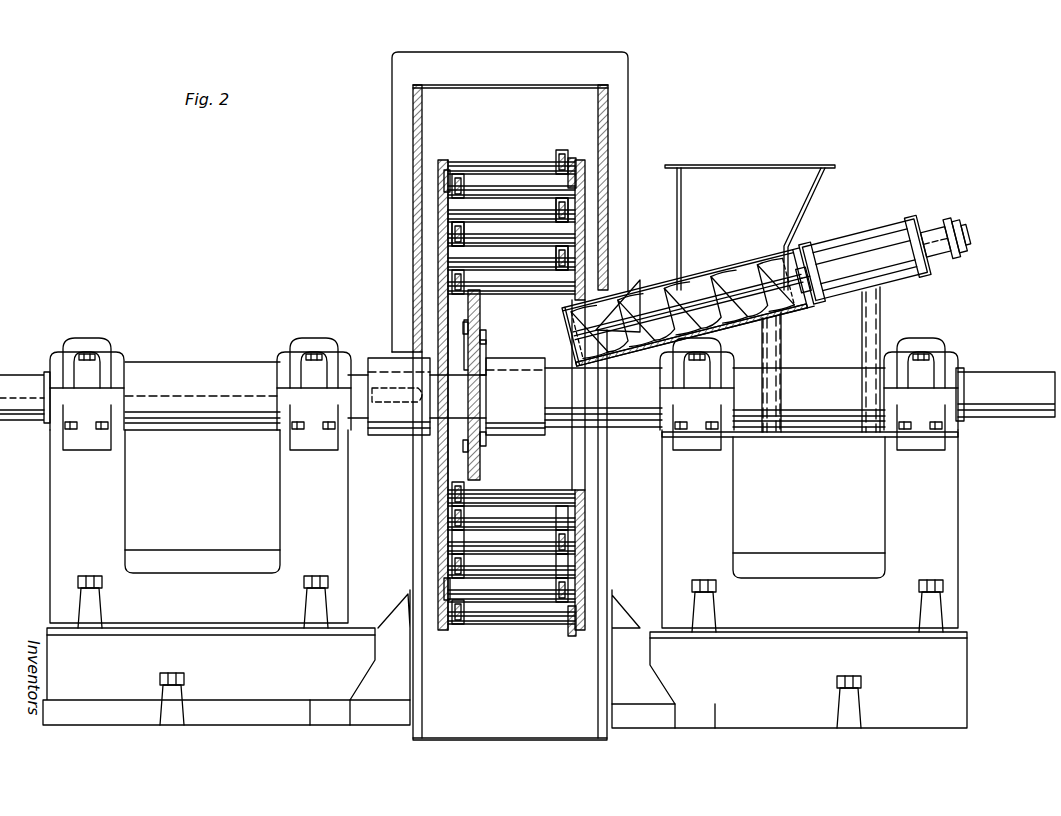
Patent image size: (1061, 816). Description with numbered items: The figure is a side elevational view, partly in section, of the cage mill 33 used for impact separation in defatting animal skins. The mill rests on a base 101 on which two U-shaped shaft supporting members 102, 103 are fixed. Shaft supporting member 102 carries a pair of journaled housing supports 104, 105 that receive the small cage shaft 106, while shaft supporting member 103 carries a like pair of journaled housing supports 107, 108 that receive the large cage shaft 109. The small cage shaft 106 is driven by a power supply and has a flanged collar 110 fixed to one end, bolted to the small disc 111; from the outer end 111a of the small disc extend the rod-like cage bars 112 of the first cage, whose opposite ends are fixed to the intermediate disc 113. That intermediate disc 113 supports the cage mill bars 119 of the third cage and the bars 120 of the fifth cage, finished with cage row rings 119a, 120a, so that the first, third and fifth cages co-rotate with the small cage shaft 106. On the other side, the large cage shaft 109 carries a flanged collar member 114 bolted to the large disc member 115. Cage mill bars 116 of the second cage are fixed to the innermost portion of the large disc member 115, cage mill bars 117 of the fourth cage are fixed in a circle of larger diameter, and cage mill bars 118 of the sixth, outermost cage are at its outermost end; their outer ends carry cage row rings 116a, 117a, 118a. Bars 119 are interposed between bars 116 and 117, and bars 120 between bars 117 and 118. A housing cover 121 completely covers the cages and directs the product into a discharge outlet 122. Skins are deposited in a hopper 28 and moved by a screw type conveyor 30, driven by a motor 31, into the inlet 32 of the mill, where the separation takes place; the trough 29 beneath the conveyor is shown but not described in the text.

The hopper 28 is at (818, 182).
The trough 29 is at (640, 292).
The screw type conveyor 30 is at (712, 275).
The motor 31 is at (876, 235).
The inlet 32 is at (555, 478).
The cage mill 33 is at (628, 52).
The base 101 is at (965, 662).
The shaft supporting member 102 is at (945, 508).
The shaft supporting member 103 is at (58, 498).
The journaled housing support 104 is at (700, 346).
The journaled housing support 105 is at (925, 348).
The small cage shaft 106 is at (1008, 378).
The journaled housing support 107 is at (86, 345).
The journaled housing support 108 is at (313, 345).
The large cage shaft 109 is at (5, 380).
The flanged collar 110 is at (532, 346).
The small disc 111 is at (480, 302).
The outer end 111a is at (468, 285).
The cage bars 112 is at (540, 298).
The intermediate disc 113 is at (580, 198).
The flanged collar member 114 is at (380, 360).
The large disc member 115 is at (438, 195).
The cage mill bars 116 is at (455, 268).
The cage row ring 116a is at (598, 258).
The cage mill bars 117 is at (455, 213).
The cage row ring 117a is at (580, 212).
The cage mill bars 118 is at (468, 165).
The cage row ring 118a is at (574, 160).
The cage mill bars 119 is at (596, 240).
The cage row ring 119a is at (452, 240).
The cage mill bars 120 is at (553, 194).
The cage row ring 120a is at (445, 182).
The housing cover 121 is at (505, 60).
The discharge outlet 122 is at (514, 740).